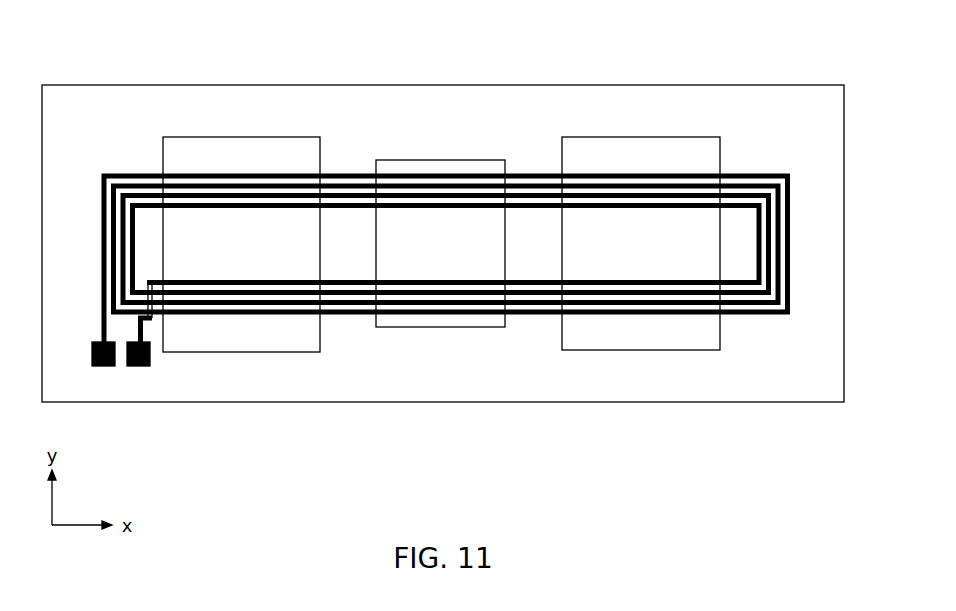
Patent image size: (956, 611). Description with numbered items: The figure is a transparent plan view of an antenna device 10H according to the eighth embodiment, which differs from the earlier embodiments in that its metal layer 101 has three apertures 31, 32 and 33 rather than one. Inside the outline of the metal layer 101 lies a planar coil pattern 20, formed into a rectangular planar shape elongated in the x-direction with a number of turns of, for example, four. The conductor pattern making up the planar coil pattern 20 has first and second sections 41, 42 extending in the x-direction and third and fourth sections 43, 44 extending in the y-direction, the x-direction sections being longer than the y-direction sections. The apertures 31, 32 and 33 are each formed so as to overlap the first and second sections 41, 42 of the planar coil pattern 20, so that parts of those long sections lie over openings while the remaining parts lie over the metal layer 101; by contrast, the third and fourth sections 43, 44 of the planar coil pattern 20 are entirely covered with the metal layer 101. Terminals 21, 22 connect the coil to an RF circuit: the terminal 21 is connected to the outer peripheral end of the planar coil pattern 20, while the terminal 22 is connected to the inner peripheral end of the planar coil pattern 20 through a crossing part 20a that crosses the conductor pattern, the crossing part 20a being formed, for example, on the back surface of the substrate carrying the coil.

The antenna device 10H is at (754, 40).
The metal layer 101 is at (133, 85).
The planar coil pattern 20 is at (445, 247).
The crossing part 20a is at (156, 322).
The terminal 21 is at (104, 368).
The terminal 22 is at (140, 368).
The aperture 31 is at (437, 160).
The aperture 32 is at (232, 137).
The aperture 33 is at (640, 137).
The first section 41 is at (525, 173).
The second section 42 is at (527, 315).
The third section 43 is at (100, 243).
The fourth section 44 is at (791, 241).